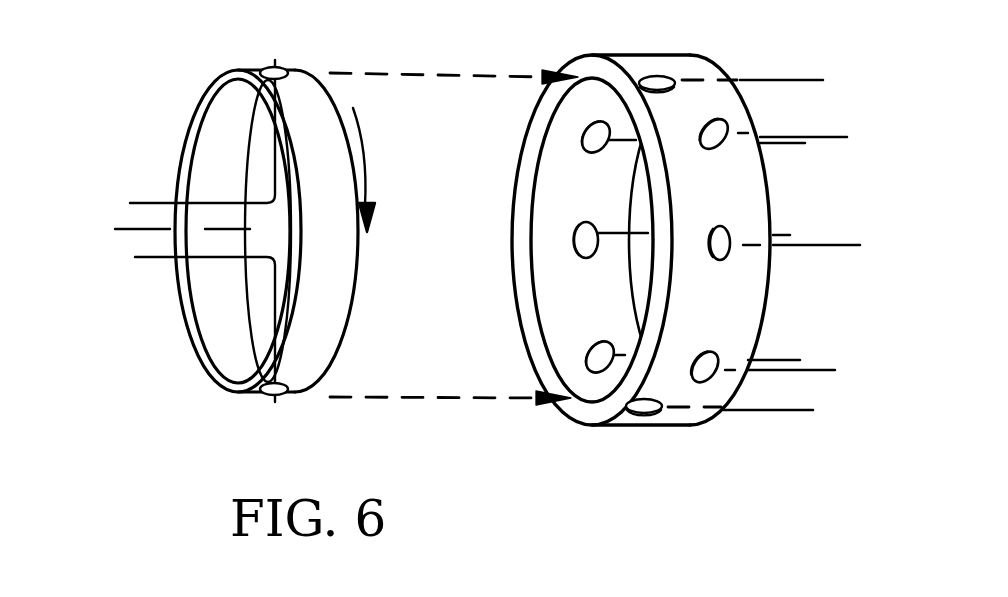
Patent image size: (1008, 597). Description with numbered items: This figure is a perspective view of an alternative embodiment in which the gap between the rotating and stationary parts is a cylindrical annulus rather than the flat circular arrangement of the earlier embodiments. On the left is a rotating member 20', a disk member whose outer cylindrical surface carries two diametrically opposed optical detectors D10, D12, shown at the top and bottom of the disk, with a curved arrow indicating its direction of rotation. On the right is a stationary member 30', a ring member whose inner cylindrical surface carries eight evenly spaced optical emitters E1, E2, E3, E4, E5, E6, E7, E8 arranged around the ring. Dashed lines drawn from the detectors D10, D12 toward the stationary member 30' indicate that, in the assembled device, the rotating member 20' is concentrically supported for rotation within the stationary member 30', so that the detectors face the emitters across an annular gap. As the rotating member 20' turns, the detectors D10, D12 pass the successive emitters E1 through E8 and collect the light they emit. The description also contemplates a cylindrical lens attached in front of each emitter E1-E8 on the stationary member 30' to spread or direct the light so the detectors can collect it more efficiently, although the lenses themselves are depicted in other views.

The rotating member 20' is at (245, 231).
The stationary member 30' is at (686, 274).
The optical detector D10 is at (278, 66).
The optical detector D12 is at (275, 397).
The optical emitter E1 is at (654, 76).
The optical emitter E2 is at (723, 120).
The optical emitter E3 is at (732, 228).
The optical emitter E4 is at (717, 350).
The optical emitter E5 is at (646, 414).
The optical emitter E6 is at (590, 356).
The optical emitter E7 is at (572, 238).
The optical emitter E8 is at (585, 142).